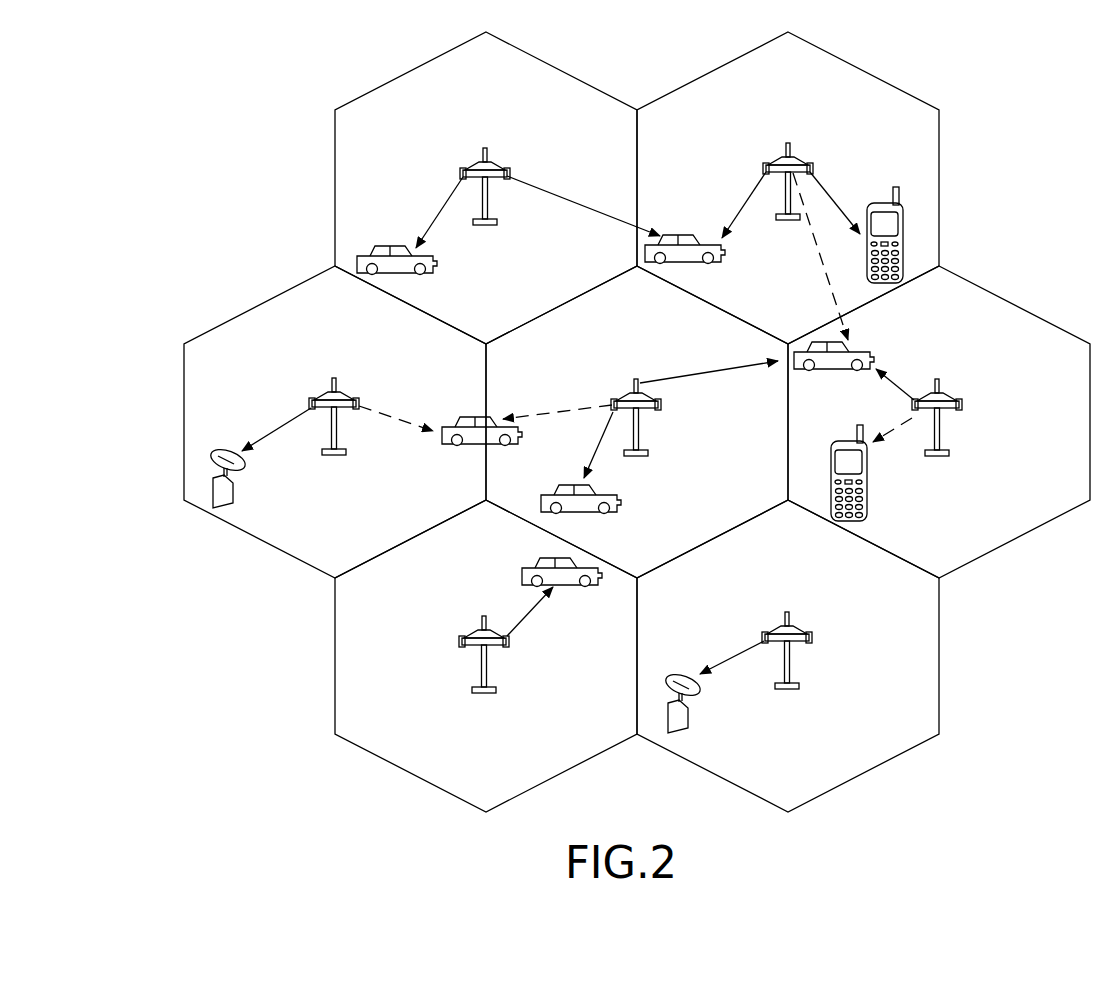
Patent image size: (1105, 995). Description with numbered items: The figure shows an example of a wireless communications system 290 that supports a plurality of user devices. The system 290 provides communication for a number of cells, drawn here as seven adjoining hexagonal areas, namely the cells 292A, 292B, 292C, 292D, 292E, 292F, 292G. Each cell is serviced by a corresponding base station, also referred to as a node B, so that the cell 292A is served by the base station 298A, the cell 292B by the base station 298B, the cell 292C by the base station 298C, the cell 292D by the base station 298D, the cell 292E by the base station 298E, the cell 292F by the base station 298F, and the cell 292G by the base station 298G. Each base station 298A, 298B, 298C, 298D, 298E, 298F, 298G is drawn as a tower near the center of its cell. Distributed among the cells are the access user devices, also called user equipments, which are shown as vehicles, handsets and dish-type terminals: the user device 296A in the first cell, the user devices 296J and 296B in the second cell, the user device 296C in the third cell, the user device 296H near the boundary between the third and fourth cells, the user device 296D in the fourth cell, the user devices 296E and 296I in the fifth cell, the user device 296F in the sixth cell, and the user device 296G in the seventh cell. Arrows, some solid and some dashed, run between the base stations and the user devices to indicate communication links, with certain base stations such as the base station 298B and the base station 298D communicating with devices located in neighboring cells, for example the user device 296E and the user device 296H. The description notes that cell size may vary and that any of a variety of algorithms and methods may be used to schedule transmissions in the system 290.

The wireless communications system 290 is at (114, 119).
The cell 292A is at (510, 76).
The cell 292B is at (811, 76).
The cell 292C is at (360, 320).
The cell 292D is at (656, 320).
The cell 292E is at (963, 320).
The cell 292F is at (508, 550).
The cell 292G is at (813, 550).
The base station 298A is at (485, 147).
The base station 298B is at (788, 143).
The base station 298C is at (334, 378).
The base station 298D is at (636, 378).
The base station 298E is at (936, 378).
The base station 298F is at (484, 615).
The base station 298G is at (787, 613).
The access user device 296A is at (435, 271).
The access user device 296B is at (882, 203).
The access user device 296C is at (233, 494).
The access user device 296D is at (620, 511).
The access user device 296E is at (827, 372).
The access user device 296F is at (595, 588).
The access user device 296G is at (687, 723).
The access user device 296H is at (446, 446).
The access user device 296I is at (868, 505).
The access user device 296J is at (684, 235).